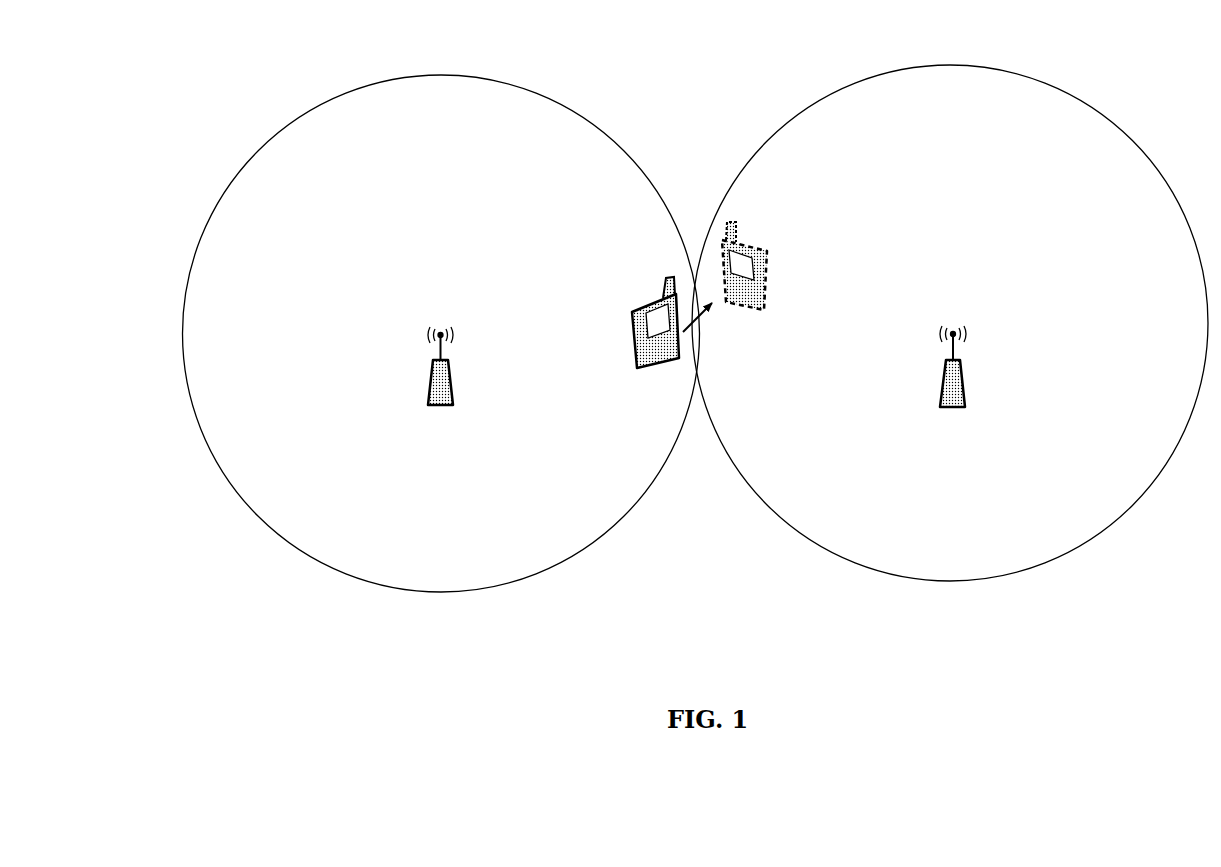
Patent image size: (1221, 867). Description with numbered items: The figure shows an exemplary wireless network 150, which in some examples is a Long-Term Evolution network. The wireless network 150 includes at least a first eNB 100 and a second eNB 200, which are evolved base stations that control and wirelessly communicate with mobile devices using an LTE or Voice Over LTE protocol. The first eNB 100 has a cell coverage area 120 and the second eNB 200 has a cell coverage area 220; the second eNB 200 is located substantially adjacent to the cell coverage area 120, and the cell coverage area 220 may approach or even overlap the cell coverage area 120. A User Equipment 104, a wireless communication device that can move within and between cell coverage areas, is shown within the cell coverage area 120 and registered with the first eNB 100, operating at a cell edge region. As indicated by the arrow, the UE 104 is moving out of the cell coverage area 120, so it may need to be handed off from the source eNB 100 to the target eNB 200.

The cell coverage area 120 is at (522, 87).
The cell coverage area 220 is at (1068, 92).
The first enhanced/evolved Node B (eNB) 100 is at (430, 389).
The second eNB 200 is at (967, 384).
The User Equipment (UE) 104 is at (629, 336).
The wireless network 150 is at (322, 629).